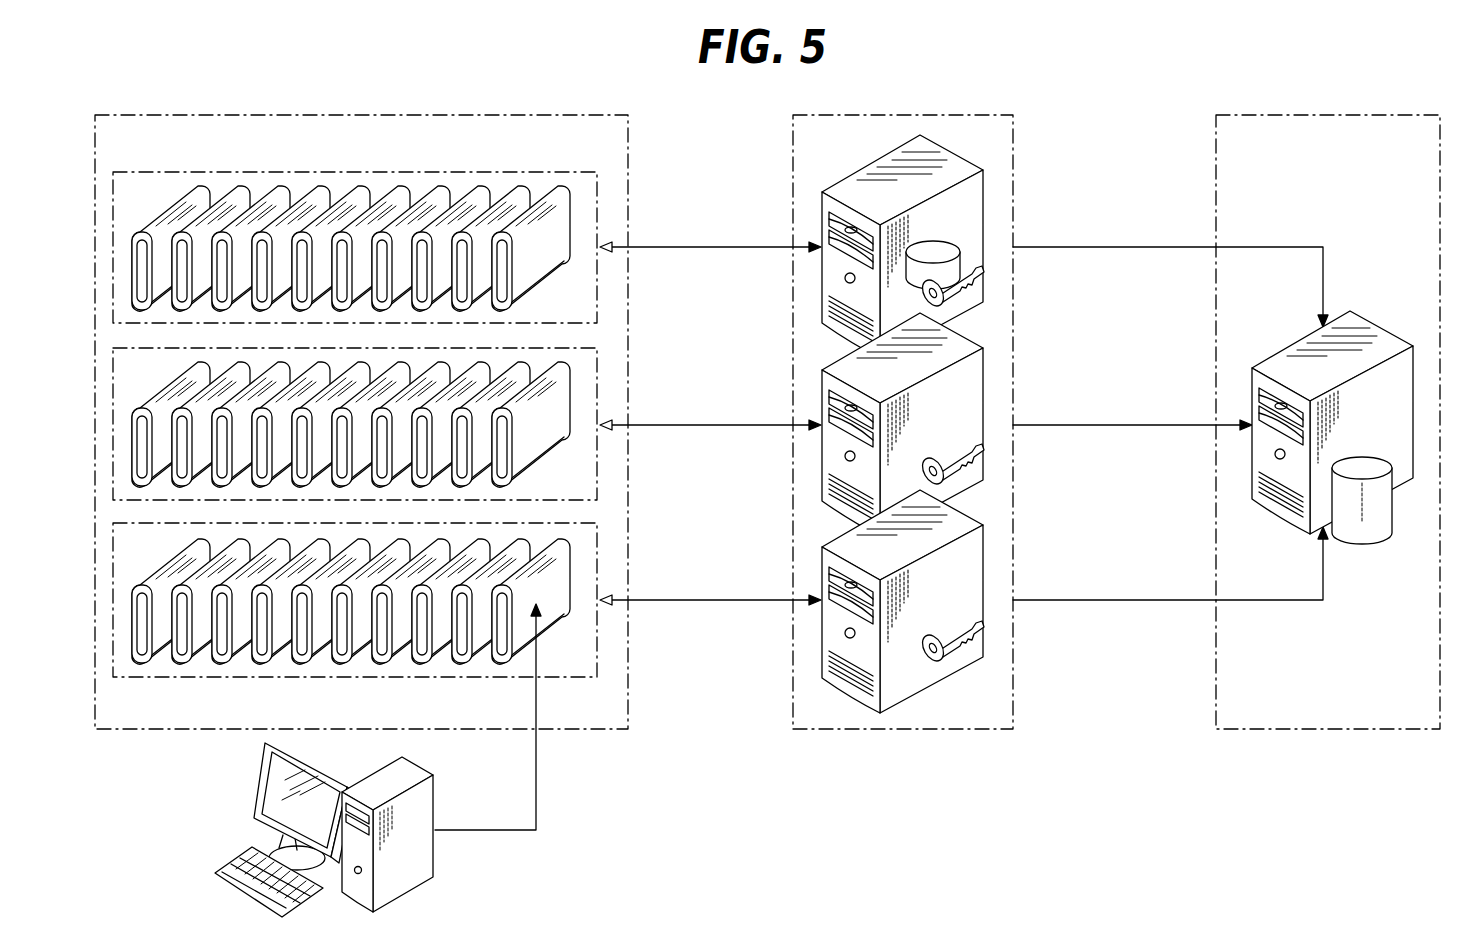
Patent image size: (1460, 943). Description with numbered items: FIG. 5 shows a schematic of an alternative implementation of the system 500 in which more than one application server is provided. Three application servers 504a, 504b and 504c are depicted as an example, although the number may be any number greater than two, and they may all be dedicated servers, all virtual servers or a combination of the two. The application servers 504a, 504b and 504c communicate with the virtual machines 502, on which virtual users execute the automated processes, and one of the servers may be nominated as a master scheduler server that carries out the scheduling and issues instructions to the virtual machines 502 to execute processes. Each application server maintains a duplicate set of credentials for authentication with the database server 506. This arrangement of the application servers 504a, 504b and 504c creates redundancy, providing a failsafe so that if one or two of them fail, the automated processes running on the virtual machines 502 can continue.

The distributed storage system 500 is at (767, 516).
The virtual machines 502 is at (140, 706).
The application server 504a is at (983, 202).
The application server 504b is at (983, 378).
The application server 504c is at (983, 553).
The central server 506 is at (1366, 313).